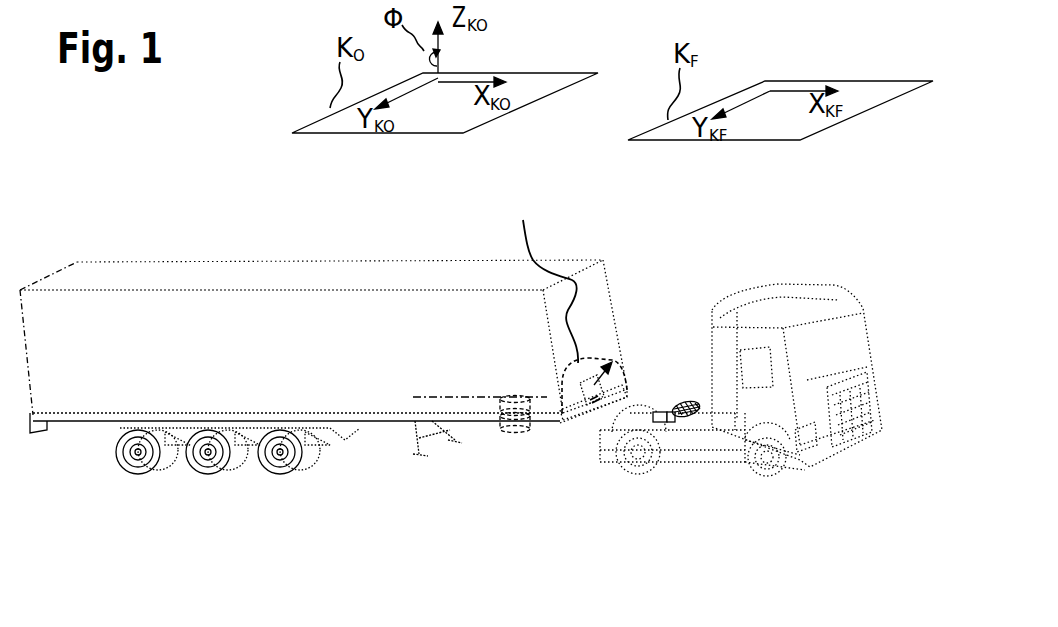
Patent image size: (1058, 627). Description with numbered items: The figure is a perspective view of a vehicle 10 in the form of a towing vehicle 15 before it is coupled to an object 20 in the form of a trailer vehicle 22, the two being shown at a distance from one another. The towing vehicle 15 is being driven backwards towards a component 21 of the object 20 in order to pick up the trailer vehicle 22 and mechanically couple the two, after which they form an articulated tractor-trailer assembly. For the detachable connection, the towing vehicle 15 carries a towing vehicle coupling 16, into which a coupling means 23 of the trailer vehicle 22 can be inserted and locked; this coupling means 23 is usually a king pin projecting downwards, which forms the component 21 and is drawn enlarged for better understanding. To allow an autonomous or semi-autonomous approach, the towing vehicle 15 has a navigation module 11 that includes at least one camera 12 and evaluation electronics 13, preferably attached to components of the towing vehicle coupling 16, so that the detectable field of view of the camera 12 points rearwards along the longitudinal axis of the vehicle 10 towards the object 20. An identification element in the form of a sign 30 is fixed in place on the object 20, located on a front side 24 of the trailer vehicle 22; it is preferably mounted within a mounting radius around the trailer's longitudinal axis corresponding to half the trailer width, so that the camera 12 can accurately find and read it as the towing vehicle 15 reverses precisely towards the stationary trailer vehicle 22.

The vehicle 10 is at (741, 344).
The navigation module 11 is at (704, 424).
The camera 12 is at (662, 422).
The evaluation electronics 13 is at (672, 422).
The towing vehicle 15 is at (768, 293).
The towing vehicle coupling 16 is at (690, 402).
The object 20 is at (330, 342).
The component 21 is at (495, 465).
The trailer vehicle 22 is at (327, 363).
The coupling means 23 is at (500, 432).
The front side 24 is at (607, 304).
The sign 30 is at (577, 400).